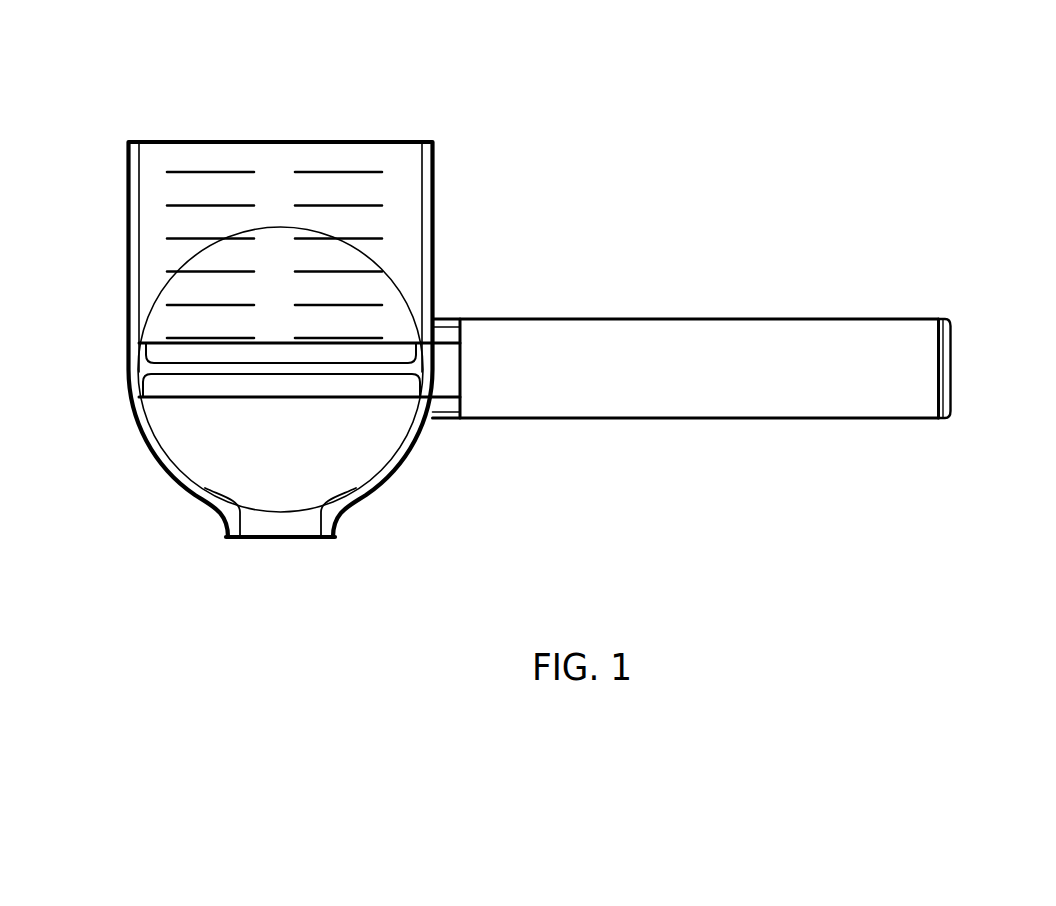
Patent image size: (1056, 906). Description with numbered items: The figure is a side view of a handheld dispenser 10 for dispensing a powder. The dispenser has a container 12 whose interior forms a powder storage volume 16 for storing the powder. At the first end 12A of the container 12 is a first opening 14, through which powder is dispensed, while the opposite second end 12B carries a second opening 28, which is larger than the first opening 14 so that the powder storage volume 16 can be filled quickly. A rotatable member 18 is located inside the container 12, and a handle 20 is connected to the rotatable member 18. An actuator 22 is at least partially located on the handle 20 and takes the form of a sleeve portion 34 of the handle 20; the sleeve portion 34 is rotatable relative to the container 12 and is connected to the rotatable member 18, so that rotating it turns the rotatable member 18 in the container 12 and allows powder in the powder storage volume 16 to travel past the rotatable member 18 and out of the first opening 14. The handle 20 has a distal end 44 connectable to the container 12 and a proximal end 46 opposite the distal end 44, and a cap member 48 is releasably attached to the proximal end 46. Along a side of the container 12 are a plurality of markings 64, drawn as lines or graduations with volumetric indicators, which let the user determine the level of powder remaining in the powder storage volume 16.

The handheld dispenser 10 is at (995, 129).
The container 12 is at (127, 273).
The first end of the container 12A is at (271, 576).
The second end of the container 12B is at (280, 95).
The first opening 14 is at (275, 540).
The powder storage volume 16 is at (368, 155).
The rotatable member 18 is at (228, 472).
The handle 20 is at (726, 380).
The actuator 22 is at (726, 380).
The second opening 28 is at (280, 140).
The sleeve portion 34 is at (726, 380).
The distal end of the handle 44 is at (460, 420).
The proximal end of the handle 46 is at (940, 420).
The cap member 48 is at (953, 400).
The markings 64 is at (228, 305).